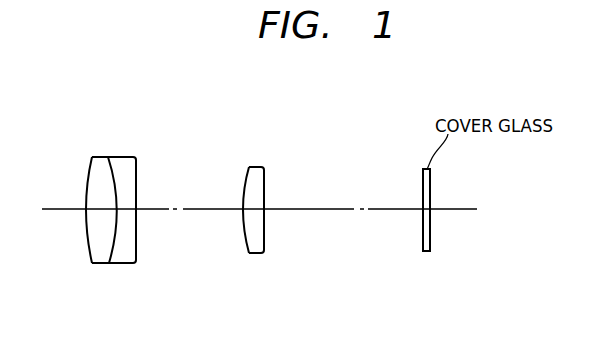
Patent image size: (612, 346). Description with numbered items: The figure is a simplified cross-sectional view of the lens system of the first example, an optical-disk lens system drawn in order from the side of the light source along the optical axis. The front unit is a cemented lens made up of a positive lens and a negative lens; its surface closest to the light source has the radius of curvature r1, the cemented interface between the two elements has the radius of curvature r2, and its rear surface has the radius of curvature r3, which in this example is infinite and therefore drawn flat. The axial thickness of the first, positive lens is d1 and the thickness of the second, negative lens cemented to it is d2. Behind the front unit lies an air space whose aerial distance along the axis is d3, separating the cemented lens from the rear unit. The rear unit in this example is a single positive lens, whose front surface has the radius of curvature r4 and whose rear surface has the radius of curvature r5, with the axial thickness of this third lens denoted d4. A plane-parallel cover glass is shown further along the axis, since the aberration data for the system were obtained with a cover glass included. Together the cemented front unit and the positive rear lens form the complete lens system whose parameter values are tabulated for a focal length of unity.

The radius of curvature of the first surface r1 is at (90, 157).
The radius of curvature of the second surface r2 is at (113, 164).
The radius of curvature of the third surface r3 is at (136, 167).
The radius of curvature of the fourth surface r4 is at (245, 175).
The radius of curvature of the fifth surface r5 is at (264, 185).
The thickness of the first lens d1 is at (98, 212).
The thickness of the second lens d2 is at (127, 213).
The aerial distance between the second and third lenses d3 is at (203, 212).
The thickness of the third lens d4 is at (252, 212).